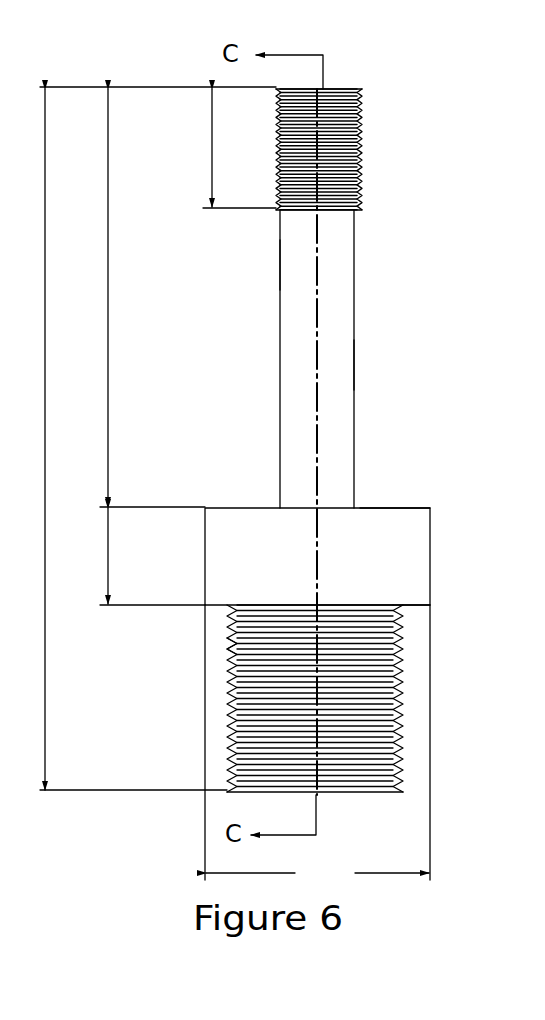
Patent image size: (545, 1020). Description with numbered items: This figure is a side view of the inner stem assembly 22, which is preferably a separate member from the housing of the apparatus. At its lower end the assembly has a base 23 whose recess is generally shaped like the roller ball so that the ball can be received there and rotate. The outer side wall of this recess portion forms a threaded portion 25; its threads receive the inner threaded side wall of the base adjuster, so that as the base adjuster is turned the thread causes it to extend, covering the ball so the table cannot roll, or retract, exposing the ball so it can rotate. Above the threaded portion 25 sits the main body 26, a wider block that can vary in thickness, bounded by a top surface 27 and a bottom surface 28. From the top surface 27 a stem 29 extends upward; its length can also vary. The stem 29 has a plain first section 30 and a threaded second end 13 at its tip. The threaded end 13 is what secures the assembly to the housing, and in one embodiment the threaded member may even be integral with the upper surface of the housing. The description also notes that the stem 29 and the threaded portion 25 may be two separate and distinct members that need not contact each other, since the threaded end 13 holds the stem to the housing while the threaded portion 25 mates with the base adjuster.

The threaded end 13 is at (361, 124).
The inner stem assembly 22 is at (279, 362).
The base 23 is at (218, 697).
The threaded portion 25 is at (227, 645).
The main body 26 is at (205, 552).
The top surface 27 is at (392, 507).
The bottom surface 28 is at (493, 562).
The stem 29 is at (355, 364).
The first section 30 is at (278, 264).